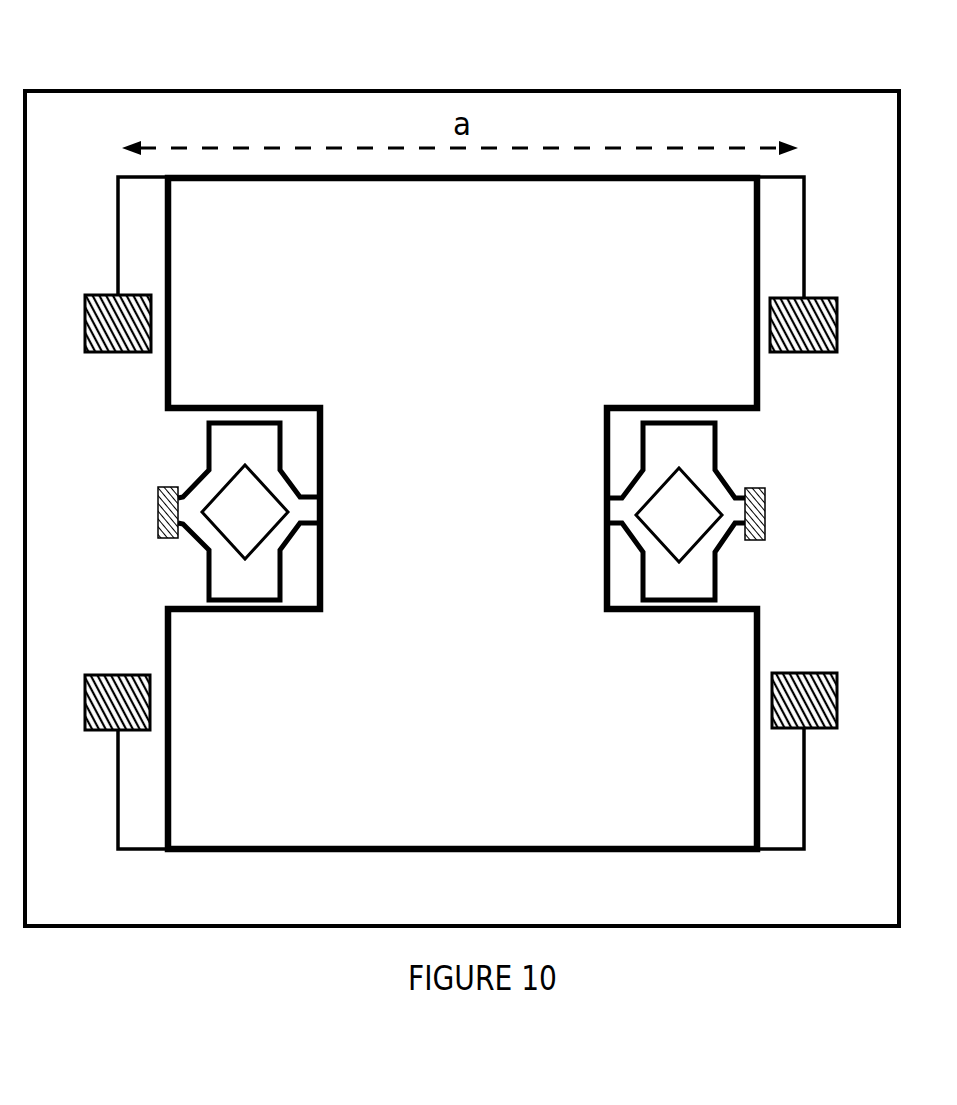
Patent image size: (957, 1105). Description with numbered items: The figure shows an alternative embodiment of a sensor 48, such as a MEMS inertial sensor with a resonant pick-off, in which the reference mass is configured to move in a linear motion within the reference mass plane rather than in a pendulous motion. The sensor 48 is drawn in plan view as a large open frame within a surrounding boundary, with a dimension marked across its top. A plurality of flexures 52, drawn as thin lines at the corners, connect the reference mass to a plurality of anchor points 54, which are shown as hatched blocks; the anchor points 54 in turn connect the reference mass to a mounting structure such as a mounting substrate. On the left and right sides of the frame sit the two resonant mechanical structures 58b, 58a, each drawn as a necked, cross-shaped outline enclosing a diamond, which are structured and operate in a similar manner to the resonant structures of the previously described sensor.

The sensor 48 is at (390, 56).
The flexures 52 is at (803, 237).
The anchor points 54 is at (135, 352).
The resonant mechanical structure 58a is at (725, 545).
The resonant mechanical structure 58b is at (197, 540).